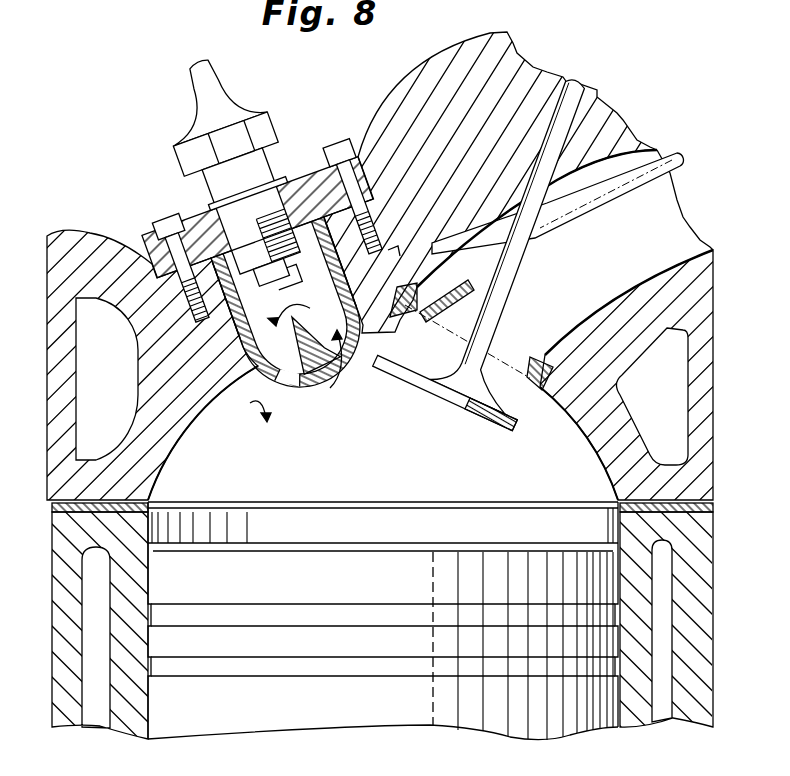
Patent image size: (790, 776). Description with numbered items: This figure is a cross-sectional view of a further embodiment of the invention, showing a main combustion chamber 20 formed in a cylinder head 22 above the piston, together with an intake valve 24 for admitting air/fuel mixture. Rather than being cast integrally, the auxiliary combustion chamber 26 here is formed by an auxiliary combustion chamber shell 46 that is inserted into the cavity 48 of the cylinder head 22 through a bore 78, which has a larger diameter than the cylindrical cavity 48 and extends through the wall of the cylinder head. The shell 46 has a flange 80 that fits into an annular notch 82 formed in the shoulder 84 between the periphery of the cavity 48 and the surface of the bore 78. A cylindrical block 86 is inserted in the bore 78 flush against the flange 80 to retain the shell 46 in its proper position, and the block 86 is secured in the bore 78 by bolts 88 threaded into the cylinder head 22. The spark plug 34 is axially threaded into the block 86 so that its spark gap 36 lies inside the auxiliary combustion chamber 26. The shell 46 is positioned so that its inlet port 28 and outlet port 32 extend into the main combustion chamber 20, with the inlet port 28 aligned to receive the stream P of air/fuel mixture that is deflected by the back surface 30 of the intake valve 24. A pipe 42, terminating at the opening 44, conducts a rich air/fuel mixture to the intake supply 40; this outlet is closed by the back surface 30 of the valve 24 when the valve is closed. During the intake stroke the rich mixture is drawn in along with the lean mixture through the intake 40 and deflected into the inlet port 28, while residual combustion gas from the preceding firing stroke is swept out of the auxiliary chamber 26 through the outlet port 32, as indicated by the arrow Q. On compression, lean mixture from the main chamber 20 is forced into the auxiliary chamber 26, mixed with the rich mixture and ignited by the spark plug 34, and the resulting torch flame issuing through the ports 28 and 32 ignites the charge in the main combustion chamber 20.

The main combustion chamber 20 is at (383, 598).
The cylinder head 22 is at (469, 250).
The intake valve 24 is at (507, 432).
The auxiliary combustion chamber 26 is at (294, 310).
The inlet port 28 is at (362, 352).
The back surface 30 is at (415, 377).
The outlet port 32 is at (283, 360).
The spark plug 34 is at (262, 128).
The spark gap 36 is at (286, 283).
The intake supply 40 is at (525, 354).
The pipe 42 is at (612, 195).
The opening 44 is at (411, 286).
The auxiliary combustion chamber shell 46 is at (240, 360).
The cavity 48 is at (352, 292).
The bore 78 is at (372, 190).
The flange 80 is at (220, 318).
The annular notch 82 is at (398, 254).
The shoulder 84 is at (186, 300).
The cylindrical block 86 is at (283, 180).
The bolts 88 is at (153, 222).
The stream of air/fuel mixture P is at (337, 366).
The arrow indicating scavenging flow Q is at (248, 417).